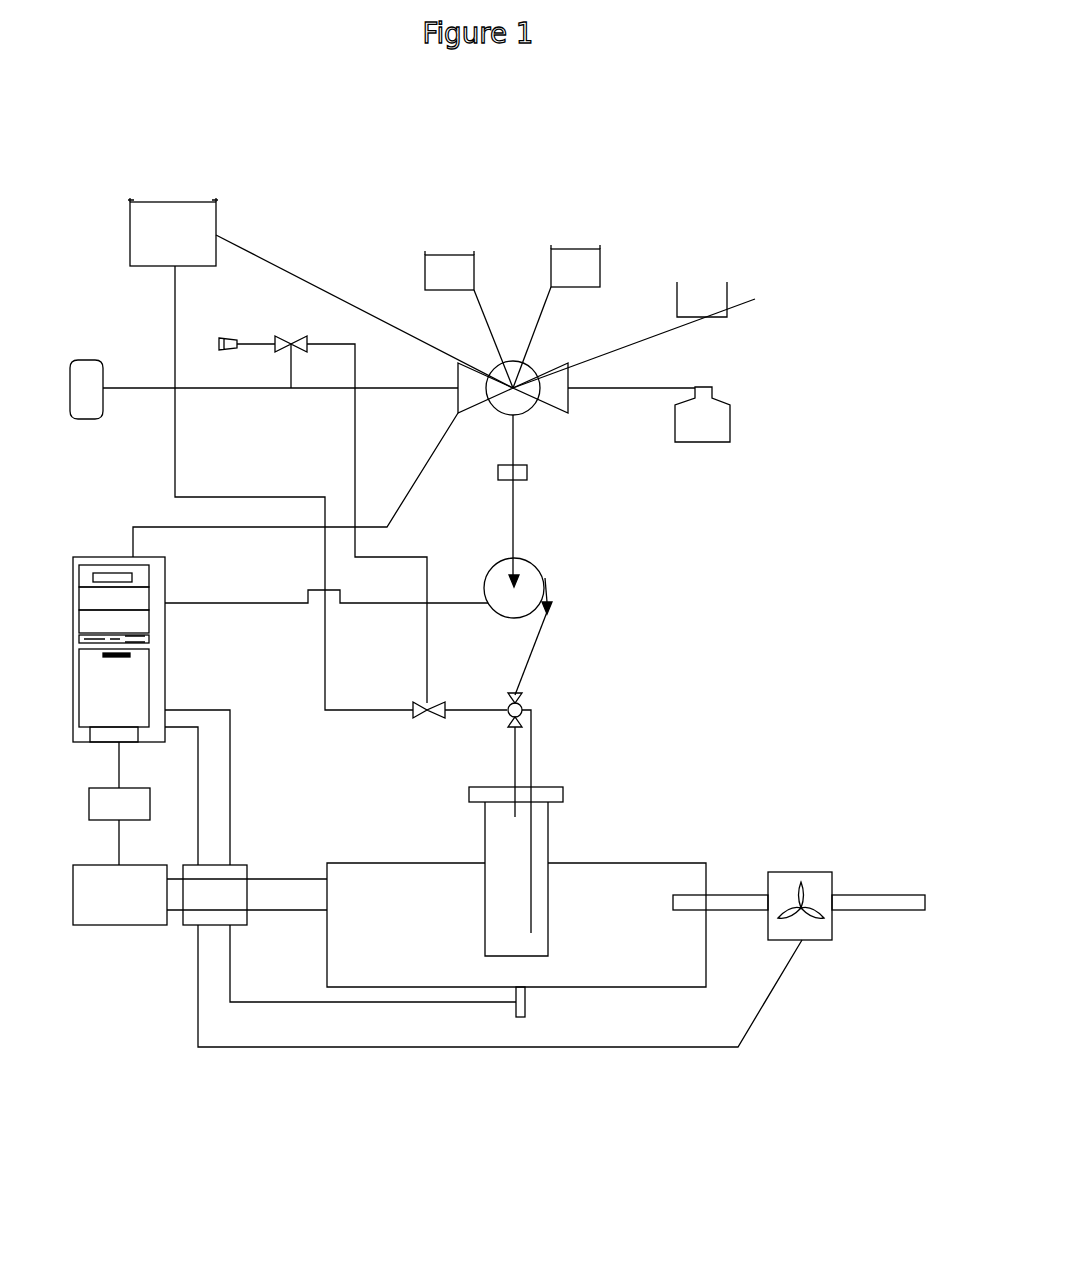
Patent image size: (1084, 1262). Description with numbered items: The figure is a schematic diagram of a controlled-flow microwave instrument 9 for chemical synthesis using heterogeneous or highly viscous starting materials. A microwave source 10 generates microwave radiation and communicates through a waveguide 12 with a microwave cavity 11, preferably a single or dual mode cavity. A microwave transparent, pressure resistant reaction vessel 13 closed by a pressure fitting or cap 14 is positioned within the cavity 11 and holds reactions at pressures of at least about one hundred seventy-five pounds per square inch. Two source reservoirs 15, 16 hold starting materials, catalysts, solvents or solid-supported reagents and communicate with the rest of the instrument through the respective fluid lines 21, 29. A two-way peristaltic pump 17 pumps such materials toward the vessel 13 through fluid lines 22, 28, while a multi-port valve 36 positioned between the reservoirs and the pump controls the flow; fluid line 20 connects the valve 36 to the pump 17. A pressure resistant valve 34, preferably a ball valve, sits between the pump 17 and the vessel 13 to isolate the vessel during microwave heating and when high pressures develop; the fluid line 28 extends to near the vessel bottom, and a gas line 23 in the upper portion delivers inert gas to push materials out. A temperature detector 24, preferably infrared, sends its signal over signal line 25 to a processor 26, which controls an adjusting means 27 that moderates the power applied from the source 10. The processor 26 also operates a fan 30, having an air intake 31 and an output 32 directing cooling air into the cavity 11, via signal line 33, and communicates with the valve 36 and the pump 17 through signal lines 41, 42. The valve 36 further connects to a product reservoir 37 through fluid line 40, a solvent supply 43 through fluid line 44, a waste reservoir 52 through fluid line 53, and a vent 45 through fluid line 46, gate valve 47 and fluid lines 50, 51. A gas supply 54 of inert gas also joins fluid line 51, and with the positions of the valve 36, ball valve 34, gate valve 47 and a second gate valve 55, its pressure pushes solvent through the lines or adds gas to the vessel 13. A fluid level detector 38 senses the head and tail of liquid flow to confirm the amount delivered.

The instrument 9 is at (685, 233).
The microwave source 10 is at (120, 895).
The microwave cavity 11 is at (657, 863).
The waveguide 12 is at (247, 881).
The reaction vessel 13 is at (485, 857).
The pressure fitting or cap 14 is at (469, 790).
The source reservoir 15 is at (462, 253).
The source reservoir 16 is at (575, 247).
The pump 17 is at (545, 575).
The fluid line 20 is at (517, 542).
The fluid line 21 is at (487, 322).
The fluid line 22 is at (535, 650).
The gas line 23 is at (512, 765).
The temperature detector 24 is at (526, 995).
The signal line 25 is at (373, 1003).
The processor 26 is at (165, 673).
The adjusting means 27 is at (119, 803).
The fluid line 28 is at (533, 763).
The fluid line 29 is at (529, 328).
The fan 30 is at (776, 872).
The air intake 31 is at (872, 895).
The output 32 is at (728, 895).
The signal line 33 is at (655, 1048).
The pressure resistant valve 34 is at (531, 703).
The multi-port valve 36 is at (569, 400).
The product reservoir 37 is at (730, 415).
The fluid level detector 38 is at (530, 475).
The fluid line 40 is at (653, 387).
The signal line 41 is at (167, 525).
The signal line 42 is at (293, 602).
The solvent supply 43 is at (173, 232).
The fluid line 44 is at (268, 261).
The vent 45 is at (223, 332).
The fluid line 46 is at (250, 343).
The gate valve 47 is at (283, 352).
The fluid line 50 is at (292, 373).
The fluid line 51 is at (377, 390).
The waste reservoir 52 is at (731, 299).
The fluid line 53 is at (623, 332).
The gas supply 54 is at (88, 360).
The second gate valve 55 is at (418, 715).